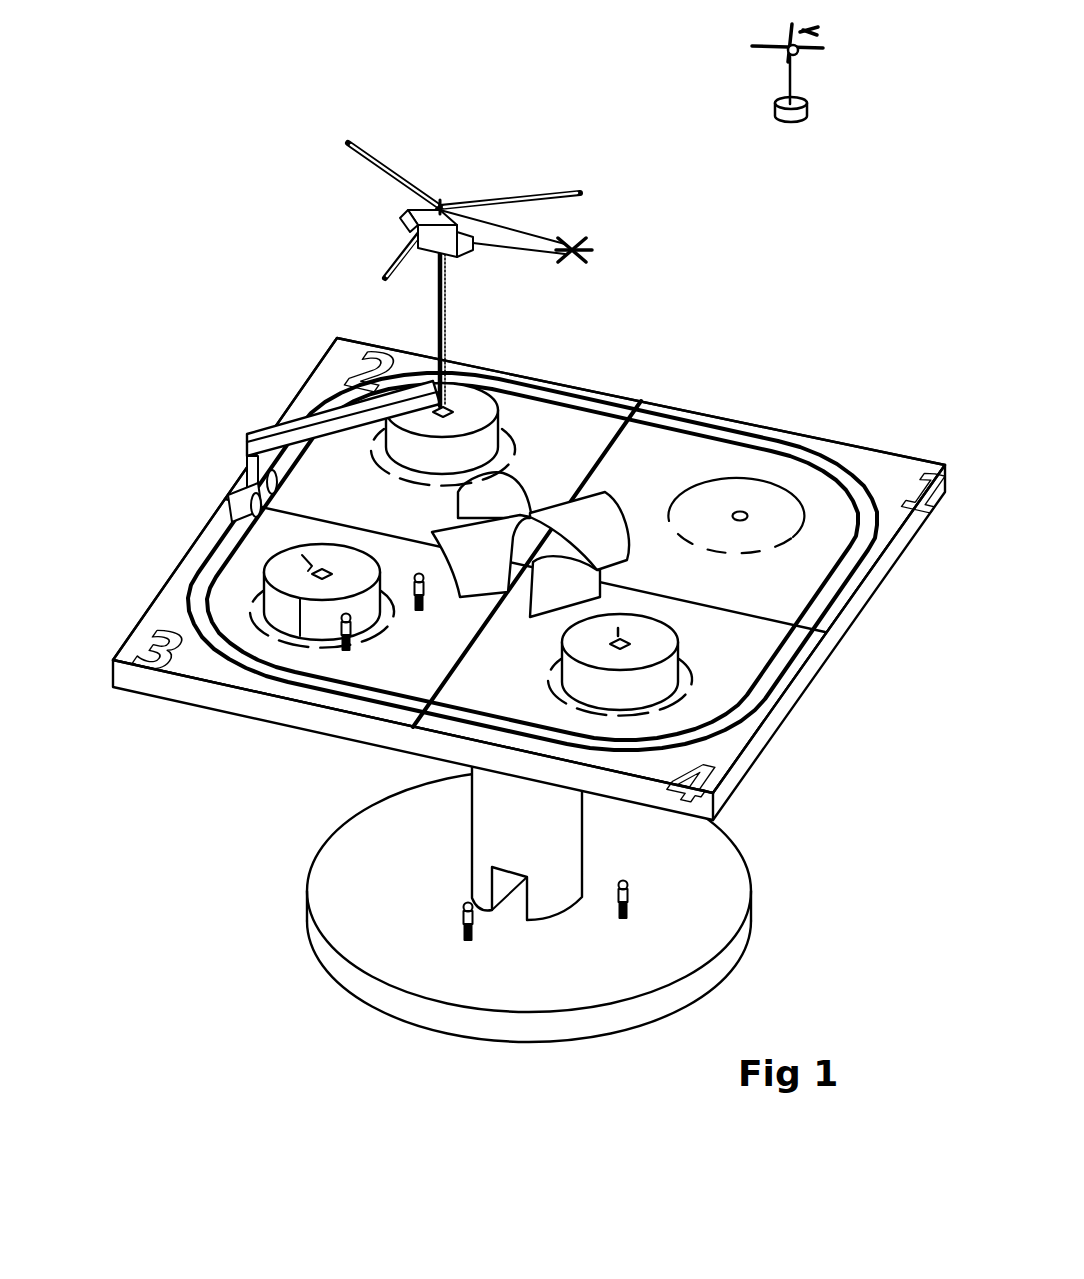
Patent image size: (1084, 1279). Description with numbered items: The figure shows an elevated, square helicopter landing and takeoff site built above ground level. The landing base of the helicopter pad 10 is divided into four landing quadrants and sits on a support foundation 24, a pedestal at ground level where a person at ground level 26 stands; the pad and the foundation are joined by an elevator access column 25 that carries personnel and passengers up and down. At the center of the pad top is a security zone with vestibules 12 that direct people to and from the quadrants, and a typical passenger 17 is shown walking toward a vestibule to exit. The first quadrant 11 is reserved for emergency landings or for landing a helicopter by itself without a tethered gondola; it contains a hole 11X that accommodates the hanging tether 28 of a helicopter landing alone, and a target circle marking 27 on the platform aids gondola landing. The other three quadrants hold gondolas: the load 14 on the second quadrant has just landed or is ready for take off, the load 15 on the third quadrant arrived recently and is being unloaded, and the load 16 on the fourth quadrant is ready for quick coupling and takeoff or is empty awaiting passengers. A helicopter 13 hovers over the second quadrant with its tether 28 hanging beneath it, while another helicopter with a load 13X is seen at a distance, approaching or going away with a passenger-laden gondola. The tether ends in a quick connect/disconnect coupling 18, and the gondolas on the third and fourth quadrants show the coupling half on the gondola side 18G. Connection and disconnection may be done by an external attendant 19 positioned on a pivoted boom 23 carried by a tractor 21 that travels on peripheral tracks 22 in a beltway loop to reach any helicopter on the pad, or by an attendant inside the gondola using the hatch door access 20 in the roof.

The landing base of helicopter pad 10 is at (197, 713).
The first quadrant 11 is at (893, 470).
The hole in quadrant 11X is at (752, 520).
The vestibules 12 is at (617, 487).
The helicopter 13 is at (440, 203).
The helicopter with a load 13X is at (786, 68).
The load at quadrant two 14 is at (500, 392).
The load at quadrant three 15 is at (262, 573).
The load at quadrant four 16 is at (650, 708).
The passenger 17 is at (412, 610).
The quick connect/disconnect coupling 18 is at (447, 375).
The coupling half on gondola side 18G is at (302, 554).
The external attendant 19 is at (430, 380).
The hatch door access 20 is at (632, 641).
The tractor 21 is at (245, 434).
The tracks for tractor 22 is at (732, 420).
The pivoted boom 23 is at (303, 423).
The support foundation 24 is at (497, 1010).
The elevator access column 25 is at (470, 843).
The person at ground level 26 is at (465, 942).
The target circle marking 27 is at (684, 690).
The tether 28 is at (437, 292).